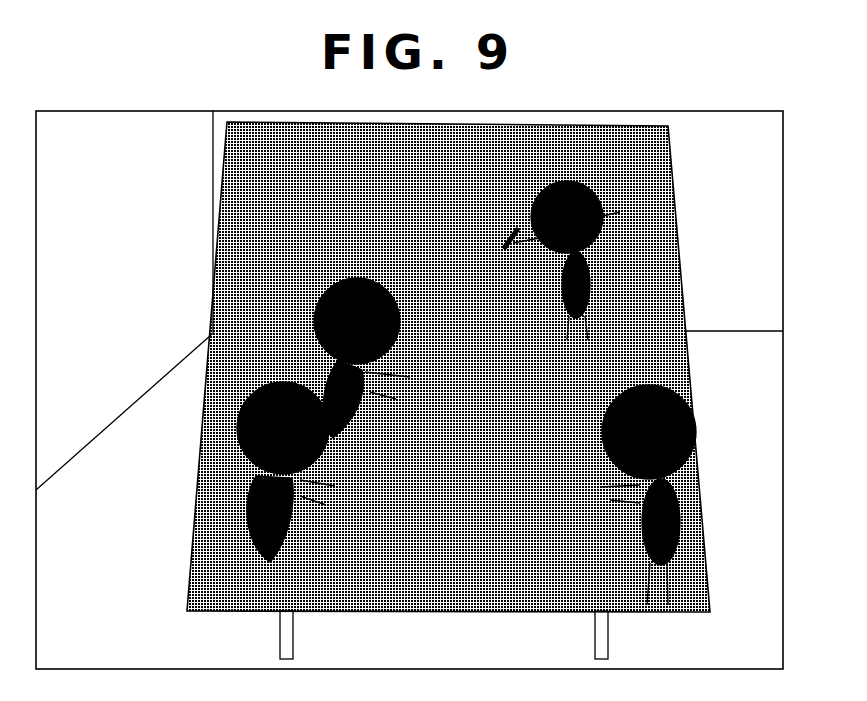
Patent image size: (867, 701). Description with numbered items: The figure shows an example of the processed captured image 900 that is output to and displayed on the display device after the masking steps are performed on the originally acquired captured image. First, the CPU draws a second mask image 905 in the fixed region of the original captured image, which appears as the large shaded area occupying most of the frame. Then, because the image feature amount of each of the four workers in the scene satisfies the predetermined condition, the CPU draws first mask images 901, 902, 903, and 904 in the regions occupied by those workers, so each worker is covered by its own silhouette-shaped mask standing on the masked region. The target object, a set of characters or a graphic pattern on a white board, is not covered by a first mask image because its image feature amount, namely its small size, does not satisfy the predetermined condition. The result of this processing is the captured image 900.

The captured image 900 is at (88, 110).
The first mask image 901 is at (326, 293).
The first mask image 902 is at (242, 430).
The first mask image 903 is at (647, 383).
The first mask image 904 is at (603, 216).
The second mask image 905 is at (683, 283).